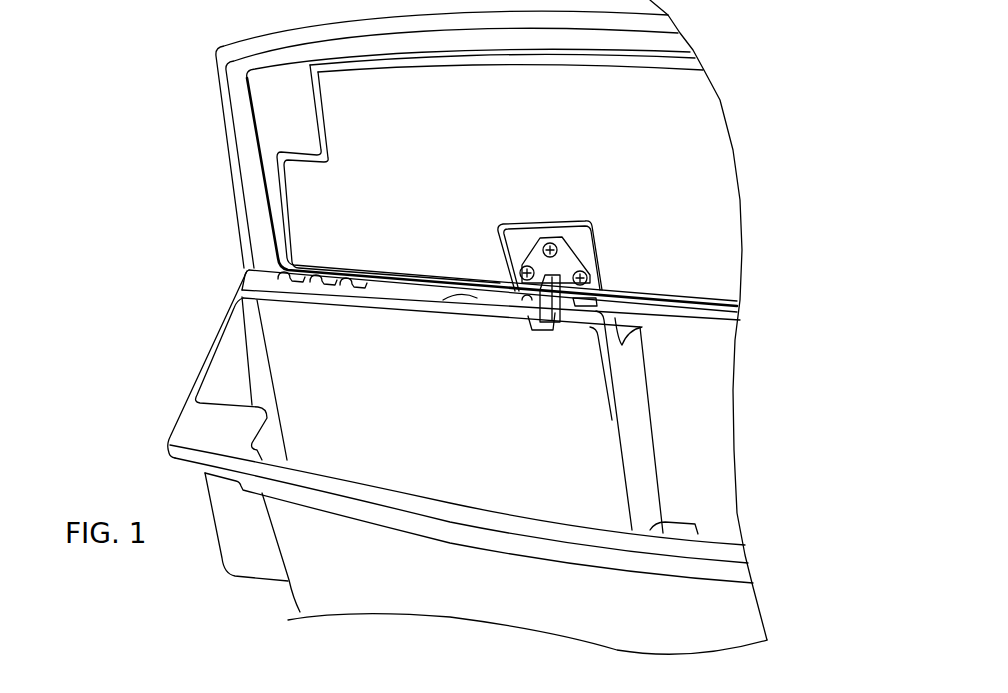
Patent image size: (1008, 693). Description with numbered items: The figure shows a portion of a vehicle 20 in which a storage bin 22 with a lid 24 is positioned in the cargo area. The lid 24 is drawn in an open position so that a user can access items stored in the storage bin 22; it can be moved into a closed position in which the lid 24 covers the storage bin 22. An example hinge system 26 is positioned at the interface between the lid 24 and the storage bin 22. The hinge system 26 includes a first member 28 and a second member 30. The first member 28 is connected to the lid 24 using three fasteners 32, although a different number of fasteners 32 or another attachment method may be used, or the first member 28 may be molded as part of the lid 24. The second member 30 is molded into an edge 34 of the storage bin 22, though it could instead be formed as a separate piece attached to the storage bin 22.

The vehicle 20 is at (200, 258).
The storage bin 22 is at (212, 385).
The lid 24 is at (250, 142).
The hinge system 26 is at (610, 281).
The first member 28 is at (525, 245).
The second member 30 is at (517, 299).
The fasteners 32 is at (521, 271).
The edge 34 is at (480, 298).